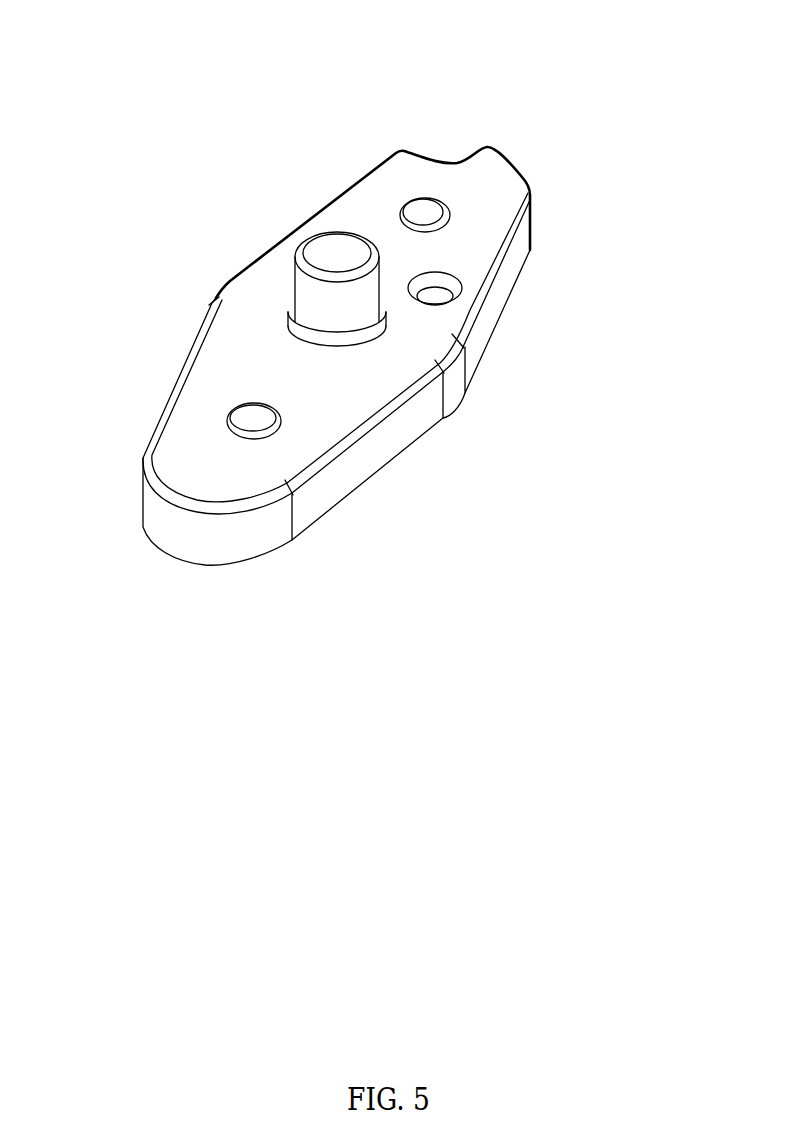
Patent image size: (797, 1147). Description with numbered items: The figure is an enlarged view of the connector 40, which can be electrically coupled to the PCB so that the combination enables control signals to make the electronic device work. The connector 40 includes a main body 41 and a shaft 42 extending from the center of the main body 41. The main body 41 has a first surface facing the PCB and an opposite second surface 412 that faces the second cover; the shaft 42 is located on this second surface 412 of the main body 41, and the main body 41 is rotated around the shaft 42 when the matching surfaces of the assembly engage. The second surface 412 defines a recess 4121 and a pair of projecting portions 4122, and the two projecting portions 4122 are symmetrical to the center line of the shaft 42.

The connector 40 is at (474, 101).
The main body 41 is at (353, 478).
The second surface 412 is at (183, 433).
The recess 4121 is at (440, 296).
The projecting portions 4122 is at (425, 203).
The shaft 42 is at (315, 290).